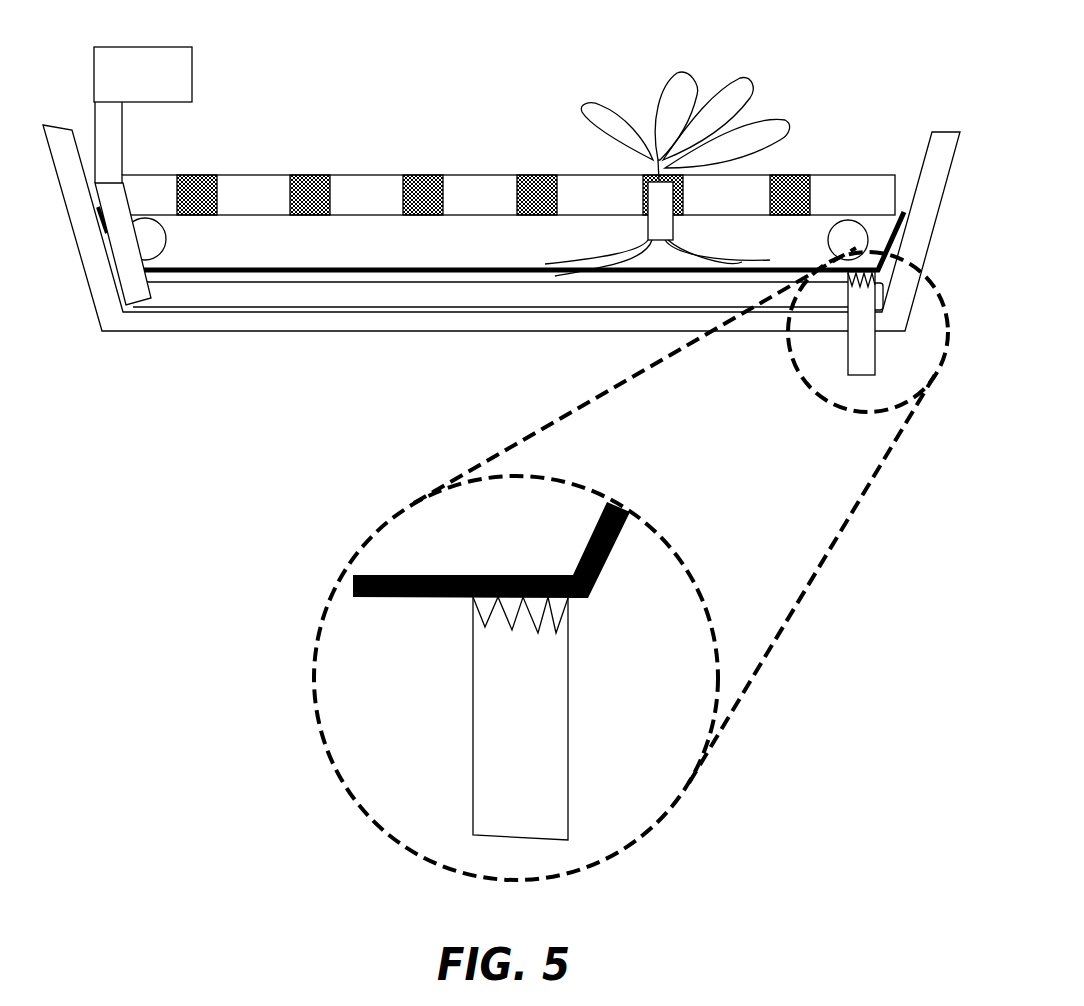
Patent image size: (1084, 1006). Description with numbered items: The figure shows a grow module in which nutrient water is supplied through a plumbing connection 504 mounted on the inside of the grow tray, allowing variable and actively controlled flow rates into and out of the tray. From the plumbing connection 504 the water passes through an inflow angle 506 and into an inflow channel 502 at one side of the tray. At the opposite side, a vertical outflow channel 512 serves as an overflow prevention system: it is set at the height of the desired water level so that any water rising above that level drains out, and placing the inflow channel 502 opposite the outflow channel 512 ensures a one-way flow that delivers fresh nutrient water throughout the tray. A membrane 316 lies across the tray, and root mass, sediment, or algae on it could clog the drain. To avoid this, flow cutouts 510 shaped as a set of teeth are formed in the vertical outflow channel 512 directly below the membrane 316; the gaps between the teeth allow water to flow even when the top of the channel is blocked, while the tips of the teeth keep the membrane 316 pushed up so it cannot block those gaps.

The membrane 316 is at (353, 587).
The inflow channel 502 is at (133, 275).
The plumbing connection 504 is at (157, 70).
The inflow angle 506 is at (103, 177).
The flow cutouts 510 is at (477, 608).
The vertical outflow channel 512 is at (863, 360).